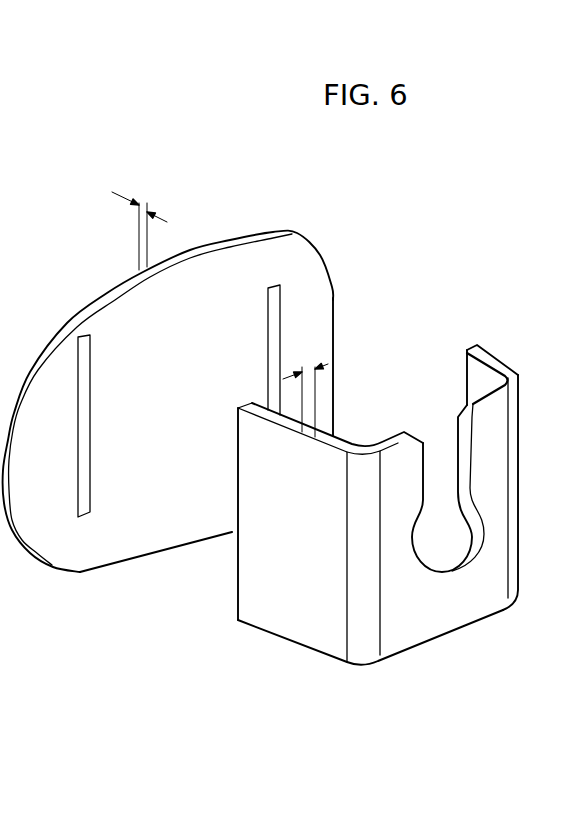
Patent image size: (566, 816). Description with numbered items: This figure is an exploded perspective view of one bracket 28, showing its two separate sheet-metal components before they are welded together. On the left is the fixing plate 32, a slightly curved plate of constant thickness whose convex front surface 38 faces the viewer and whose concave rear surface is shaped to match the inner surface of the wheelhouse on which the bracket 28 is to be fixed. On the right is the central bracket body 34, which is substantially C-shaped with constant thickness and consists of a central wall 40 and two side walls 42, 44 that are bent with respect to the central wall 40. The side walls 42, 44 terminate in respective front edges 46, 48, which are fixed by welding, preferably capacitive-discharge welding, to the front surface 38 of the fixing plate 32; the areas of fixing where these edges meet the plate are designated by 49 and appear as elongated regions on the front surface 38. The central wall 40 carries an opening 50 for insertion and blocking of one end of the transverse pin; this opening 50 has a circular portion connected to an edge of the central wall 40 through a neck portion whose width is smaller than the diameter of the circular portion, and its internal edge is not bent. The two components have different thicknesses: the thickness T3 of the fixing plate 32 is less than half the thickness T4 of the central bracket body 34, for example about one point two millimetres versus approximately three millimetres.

The bracket 28 is at (371, 483).
The fixing plate 32 is at (342, 291).
The central bracket body 34 is at (534, 484).
The front surface 38 is at (228, 276).
The central wall 40 is at (400, 622).
The side wall 42 is at (285, 595).
The side wall 44 is at (490, 357).
The front edge 46 is at (237, 484).
The front edge 48 is at (465, 384).
The areas of fixing 49 is at (85, 403).
The opening 50 is at (470, 537).
The thickness of the fixing plate T3 is at (139, 226).
The thickness of the central bracket body T4 is at (305, 389).